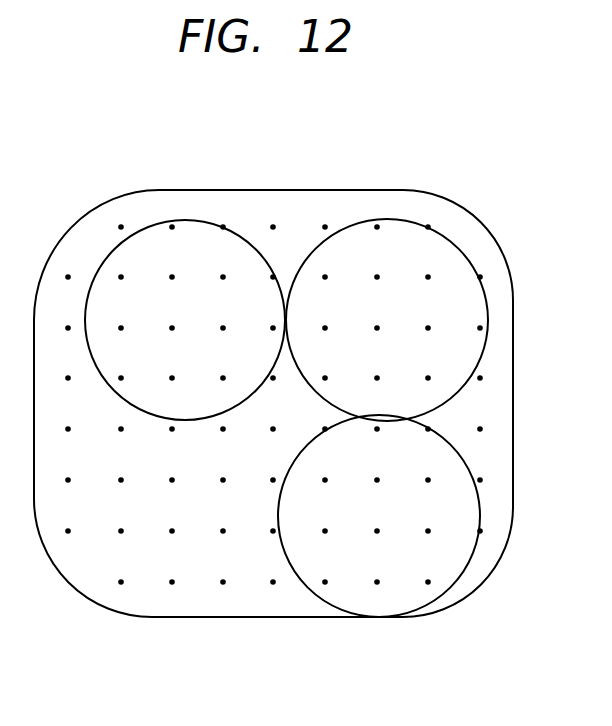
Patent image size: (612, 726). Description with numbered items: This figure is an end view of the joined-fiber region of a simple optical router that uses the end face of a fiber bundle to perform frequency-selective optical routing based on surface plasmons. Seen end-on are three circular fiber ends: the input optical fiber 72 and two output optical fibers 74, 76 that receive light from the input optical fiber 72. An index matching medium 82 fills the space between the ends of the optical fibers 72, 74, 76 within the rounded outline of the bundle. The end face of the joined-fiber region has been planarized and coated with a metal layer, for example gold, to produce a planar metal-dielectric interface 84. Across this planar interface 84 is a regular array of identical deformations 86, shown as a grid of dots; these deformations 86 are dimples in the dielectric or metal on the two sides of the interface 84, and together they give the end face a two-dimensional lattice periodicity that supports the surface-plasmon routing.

The input optical fiber 72 is at (313, 368).
The output optical fiber 74 is at (108, 365).
The output optical fiber 76 is at (353, 603).
The index matching medium 82 is at (158, 520).
The planar metal-dielectric interface 84 is at (73, 570).
The deformations 86 is at (170, 283).